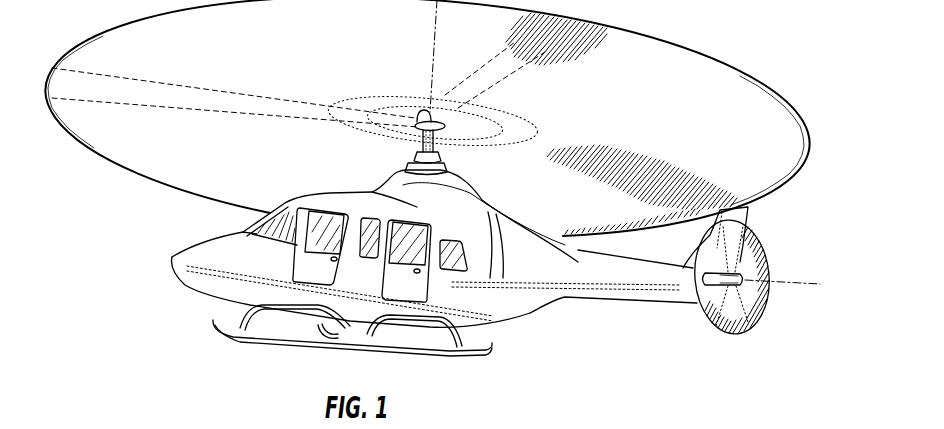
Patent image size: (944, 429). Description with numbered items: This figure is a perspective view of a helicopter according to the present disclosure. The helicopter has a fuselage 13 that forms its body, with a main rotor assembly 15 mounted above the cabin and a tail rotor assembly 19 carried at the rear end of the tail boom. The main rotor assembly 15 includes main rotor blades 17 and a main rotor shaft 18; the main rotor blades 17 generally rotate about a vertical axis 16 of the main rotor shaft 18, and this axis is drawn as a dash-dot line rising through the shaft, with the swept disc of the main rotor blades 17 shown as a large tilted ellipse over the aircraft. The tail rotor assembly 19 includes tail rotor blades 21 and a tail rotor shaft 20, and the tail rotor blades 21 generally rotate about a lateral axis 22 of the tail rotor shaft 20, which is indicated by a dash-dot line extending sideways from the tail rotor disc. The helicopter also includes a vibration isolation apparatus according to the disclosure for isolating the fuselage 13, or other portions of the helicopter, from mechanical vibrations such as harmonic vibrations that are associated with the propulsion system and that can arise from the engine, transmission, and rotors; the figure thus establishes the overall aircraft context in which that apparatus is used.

The fuselage 13 is at (217, 287).
The main rotor assembly 15 is at (485, 163).
The vertical axis 16 is at (430, 58).
The main rotor blades 17 is at (188, 88).
The main rotor shaft 18 is at (417, 142).
The tail rotor assembly 19 is at (742, 342).
The tail rotor shaft 20 is at (700, 310).
The tail rotor blades 21 is at (748, 252).
The lateral axis 22 is at (788, 283).